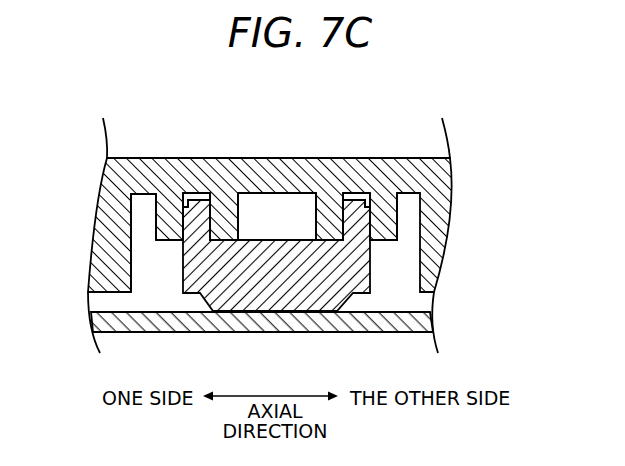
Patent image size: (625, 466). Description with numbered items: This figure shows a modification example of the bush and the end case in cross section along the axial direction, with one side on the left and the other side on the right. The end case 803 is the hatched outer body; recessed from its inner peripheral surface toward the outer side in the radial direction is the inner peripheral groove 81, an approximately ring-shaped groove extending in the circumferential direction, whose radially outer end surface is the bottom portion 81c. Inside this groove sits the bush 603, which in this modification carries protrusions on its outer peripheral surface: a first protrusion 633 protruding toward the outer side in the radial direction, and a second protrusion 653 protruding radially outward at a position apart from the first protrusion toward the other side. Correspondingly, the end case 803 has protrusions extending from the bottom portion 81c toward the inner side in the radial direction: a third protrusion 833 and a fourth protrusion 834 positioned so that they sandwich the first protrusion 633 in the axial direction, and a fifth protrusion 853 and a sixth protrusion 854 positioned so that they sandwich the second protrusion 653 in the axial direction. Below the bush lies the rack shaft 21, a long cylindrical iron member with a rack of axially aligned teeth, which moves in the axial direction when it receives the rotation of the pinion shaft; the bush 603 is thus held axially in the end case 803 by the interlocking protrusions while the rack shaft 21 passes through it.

The rack shaft 21 is at (123, 312).
The inner peripheral groove 81 is at (145, 291).
The bottom portion 81c is at (141, 200).
The bush 603 is at (357, 304).
The first protrusion 633 is at (200, 208).
The second protrusion 653 is at (357, 208).
The end case 803 is at (462, 213).
The third protrusion 833 is at (175, 220).
The fourth protrusion 834 is at (228, 222).
The fifth protrusion 853 is at (327, 223).
The sixth protrusion 854 is at (383, 230).